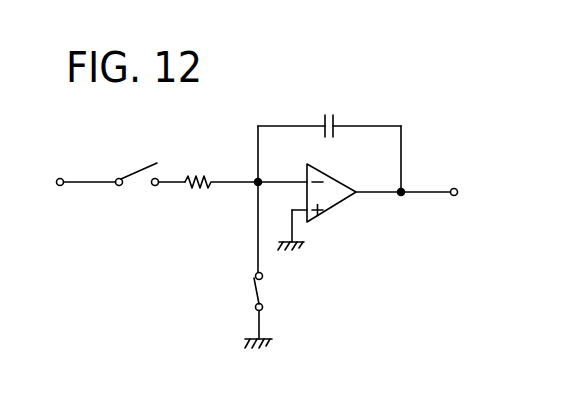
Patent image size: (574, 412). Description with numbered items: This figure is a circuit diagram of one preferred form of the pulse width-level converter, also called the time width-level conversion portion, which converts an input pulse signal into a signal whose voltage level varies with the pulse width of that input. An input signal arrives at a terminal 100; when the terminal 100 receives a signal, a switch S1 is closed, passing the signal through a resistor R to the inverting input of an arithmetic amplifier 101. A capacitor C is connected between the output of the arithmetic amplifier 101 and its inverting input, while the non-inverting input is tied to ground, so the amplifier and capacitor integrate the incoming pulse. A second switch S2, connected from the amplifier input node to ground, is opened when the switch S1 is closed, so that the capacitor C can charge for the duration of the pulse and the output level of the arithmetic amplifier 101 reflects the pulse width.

The terminal 100 is at (60, 186).
The switch S1 is at (141, 169).
The resistor R is at (199, 172).
The capacitor C is at (330, 113).
The arithmetic amplifier 101 is at (340, 200).
The switch S2 is at (250, 292).